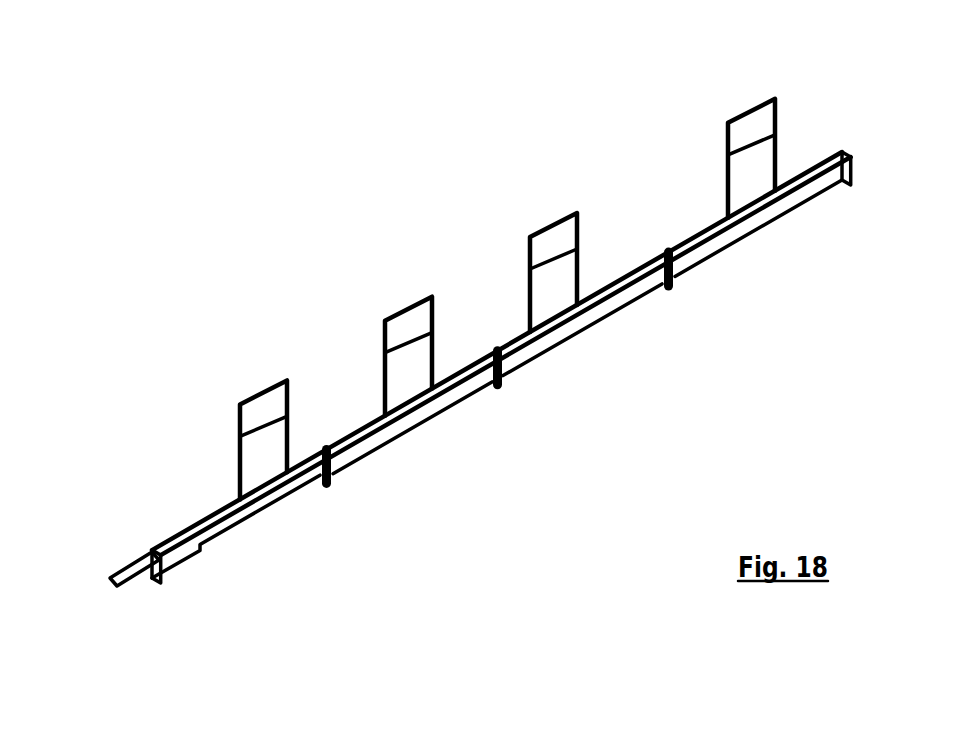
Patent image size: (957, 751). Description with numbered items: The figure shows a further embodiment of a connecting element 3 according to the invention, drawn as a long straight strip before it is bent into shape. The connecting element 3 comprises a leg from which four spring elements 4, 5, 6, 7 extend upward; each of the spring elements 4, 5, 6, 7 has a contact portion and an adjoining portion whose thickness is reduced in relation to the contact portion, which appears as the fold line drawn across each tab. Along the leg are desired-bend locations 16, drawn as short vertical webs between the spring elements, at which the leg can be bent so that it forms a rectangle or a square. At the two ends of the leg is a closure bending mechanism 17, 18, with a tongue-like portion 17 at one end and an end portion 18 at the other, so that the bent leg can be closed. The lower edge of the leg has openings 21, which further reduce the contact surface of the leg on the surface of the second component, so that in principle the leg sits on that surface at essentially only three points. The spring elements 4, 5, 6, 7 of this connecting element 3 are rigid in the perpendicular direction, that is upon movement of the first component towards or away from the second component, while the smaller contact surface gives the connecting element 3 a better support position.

The connecting element 3 is at (251, 305).
The spring element 4 is at (552, 223).
The spring element 5 is at (758, 105).
The spring element 6 is at (405, 308).
The spring element 7 is at (238, 393).
The desired-bend location 16 is at (331, 482).
The closure bending mechanism 17 is at (118, 568).
The closure bending mechanism 18 is at (842, 153).
The opening 21 is at (577, 333).